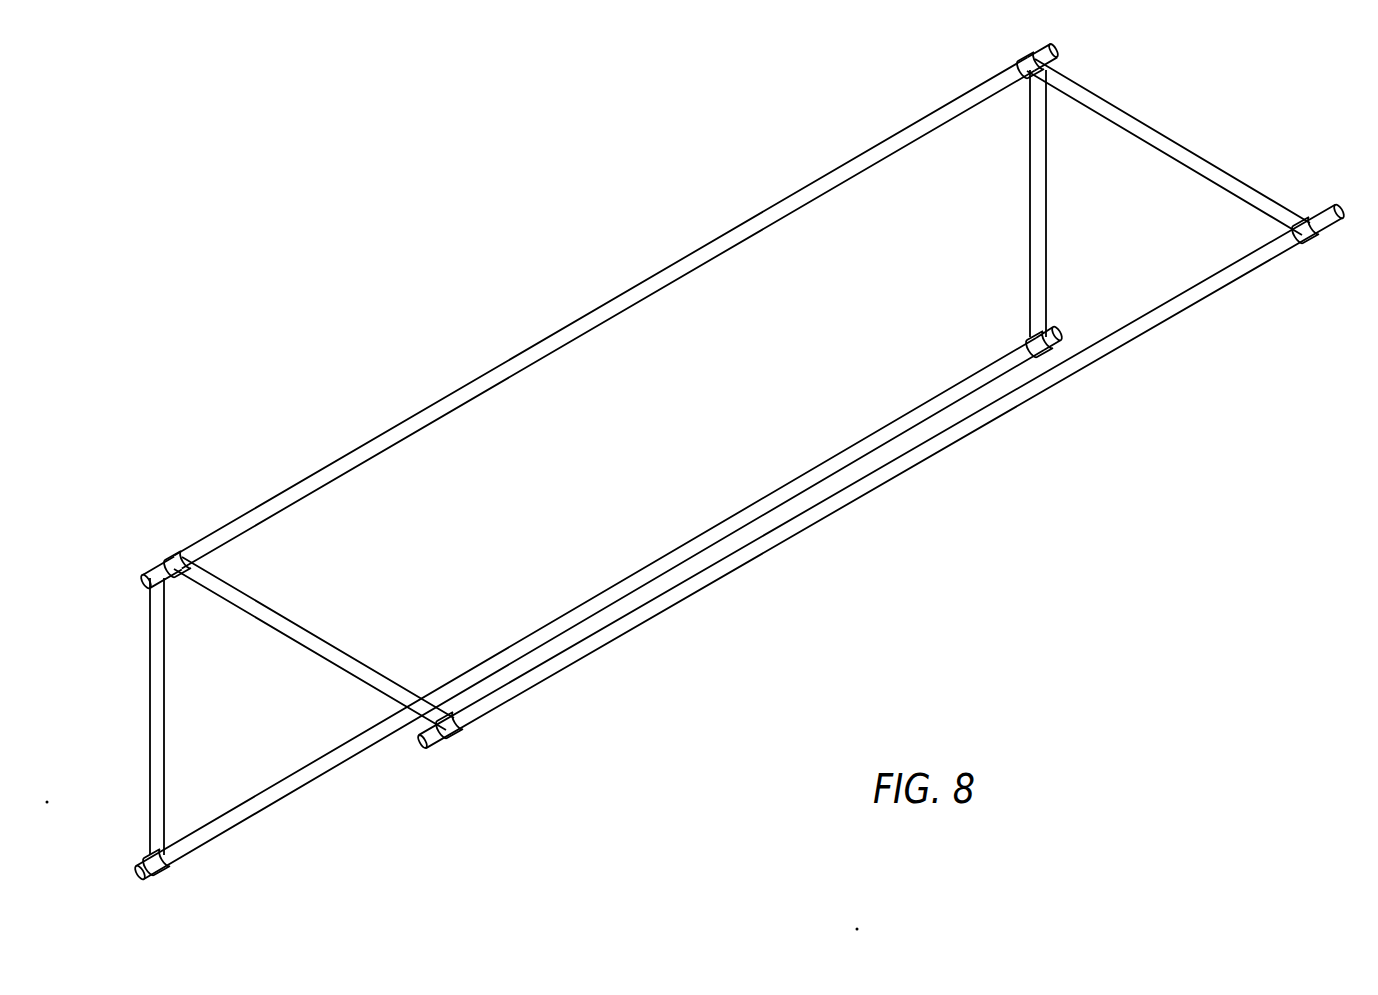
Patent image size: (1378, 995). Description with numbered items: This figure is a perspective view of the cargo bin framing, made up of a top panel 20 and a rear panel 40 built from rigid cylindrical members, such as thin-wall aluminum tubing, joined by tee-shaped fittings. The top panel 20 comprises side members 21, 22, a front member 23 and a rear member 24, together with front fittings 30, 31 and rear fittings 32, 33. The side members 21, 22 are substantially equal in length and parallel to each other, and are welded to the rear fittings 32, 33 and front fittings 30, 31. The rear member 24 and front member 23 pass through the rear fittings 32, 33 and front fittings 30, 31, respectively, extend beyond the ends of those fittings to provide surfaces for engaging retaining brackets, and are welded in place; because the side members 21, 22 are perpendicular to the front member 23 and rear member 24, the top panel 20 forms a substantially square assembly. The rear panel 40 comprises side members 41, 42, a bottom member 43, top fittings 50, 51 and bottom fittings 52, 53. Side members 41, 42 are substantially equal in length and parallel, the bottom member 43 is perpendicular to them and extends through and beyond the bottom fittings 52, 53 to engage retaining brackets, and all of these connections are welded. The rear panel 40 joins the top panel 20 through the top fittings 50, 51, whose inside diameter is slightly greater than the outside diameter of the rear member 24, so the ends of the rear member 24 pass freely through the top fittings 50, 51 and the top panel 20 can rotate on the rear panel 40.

The top panel 20 is at (1203, 350).
The side member 21 is at (1132, 128).
The side member 22 is at (280, 625).
The front member 23 is at (665, 613).
The rear member 24 is at (650, 285).
The front fitting 30 is at (1314, 233).
The front fitting 31 is at (457, 734).
The rear fitting 32 is at (1020, 64).
The rear fitting 33 is at (176, 555).
The rear panel 40 is at (340, 825).
The side member 41 is at (1030, 190).
The side member 42 is at (162, 720).
The bottom member 43 is at (836, 462).
The top fitting 50 is at (1052, 56).
The top fitting 51 is at (158, 572).
The bottom fitting 52 is at (1035, 338).
The bottom fitting 53 is at (170, 866).